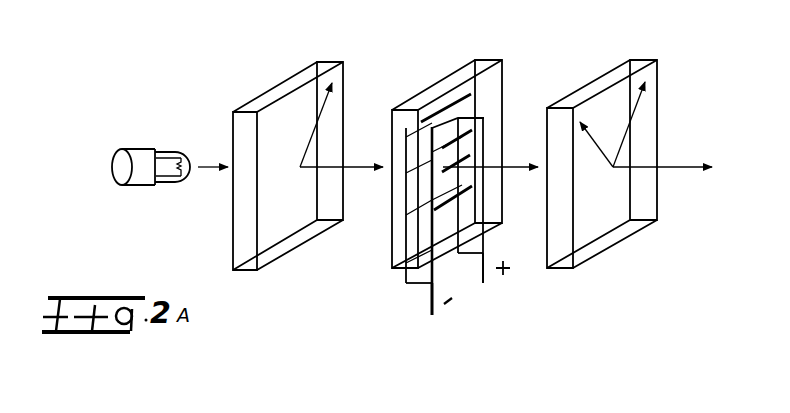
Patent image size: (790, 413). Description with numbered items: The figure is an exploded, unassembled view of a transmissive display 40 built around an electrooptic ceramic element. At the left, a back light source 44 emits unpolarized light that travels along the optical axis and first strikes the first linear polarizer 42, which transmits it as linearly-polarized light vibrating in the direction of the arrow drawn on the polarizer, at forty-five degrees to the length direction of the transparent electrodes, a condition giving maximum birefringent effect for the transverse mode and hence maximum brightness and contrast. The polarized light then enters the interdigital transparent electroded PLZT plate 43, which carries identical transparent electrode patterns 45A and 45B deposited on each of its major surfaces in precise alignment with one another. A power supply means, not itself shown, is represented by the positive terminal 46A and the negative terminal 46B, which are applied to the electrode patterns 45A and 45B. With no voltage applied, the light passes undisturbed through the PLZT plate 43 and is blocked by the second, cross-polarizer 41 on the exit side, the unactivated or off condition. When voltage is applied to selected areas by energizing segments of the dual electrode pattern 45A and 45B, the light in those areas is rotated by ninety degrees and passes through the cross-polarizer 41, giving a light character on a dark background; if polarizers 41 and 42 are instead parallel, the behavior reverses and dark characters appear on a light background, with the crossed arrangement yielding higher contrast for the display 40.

The transmissive display 40 is at (616, 33).
The second polarizer 41 is at (652, 122).
The first polarizer 42 is at (300, 240).
The PLZT plate 43 is at (497, 73).
The back light source 44 is at (141, 155).
The transparent electrode pattern 45A is at (488, 122).
The transparent electrode pattern 45B is at (405, 130).
The positive terminal 46A is at (483, 283).
The negative terminal 46B is at (430, 309).